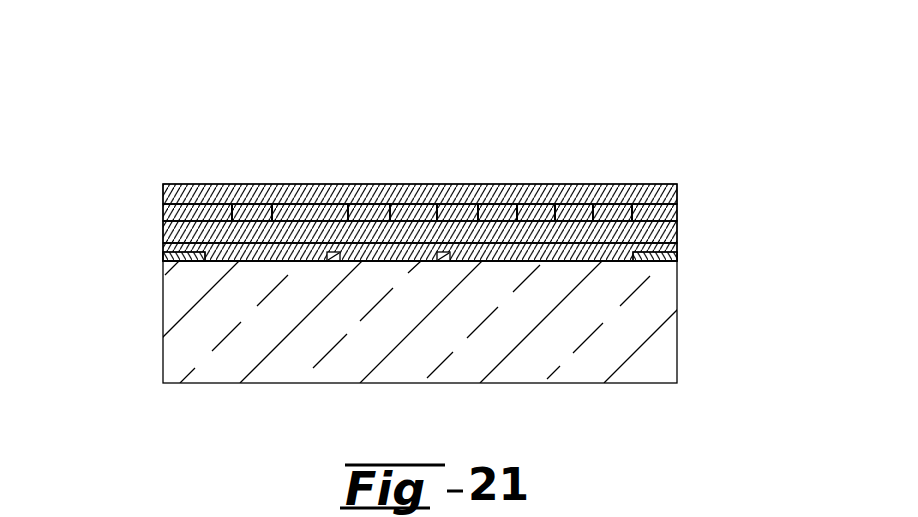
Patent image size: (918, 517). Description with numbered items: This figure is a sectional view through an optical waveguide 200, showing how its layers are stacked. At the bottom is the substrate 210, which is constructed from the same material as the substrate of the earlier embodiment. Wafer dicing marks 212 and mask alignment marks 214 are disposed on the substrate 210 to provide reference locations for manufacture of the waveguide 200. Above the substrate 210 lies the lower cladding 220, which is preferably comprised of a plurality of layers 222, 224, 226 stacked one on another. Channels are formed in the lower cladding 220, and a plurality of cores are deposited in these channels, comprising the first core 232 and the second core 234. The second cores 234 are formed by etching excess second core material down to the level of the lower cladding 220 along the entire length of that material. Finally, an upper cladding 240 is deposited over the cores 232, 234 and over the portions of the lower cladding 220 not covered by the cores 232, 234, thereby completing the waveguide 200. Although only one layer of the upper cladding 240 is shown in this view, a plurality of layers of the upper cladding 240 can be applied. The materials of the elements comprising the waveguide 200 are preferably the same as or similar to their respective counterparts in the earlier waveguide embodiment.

The waveguide 200 is at (382, 83).
The substrate 210 is at (677, 352).
The wafer dicing marks 212 is at (173, 264).
The mask alignment marks 214 is at (440, 262).
The lower cladding 220 is at (150, 207).
The layer of lower cladding 222 is at (677, 247).
The layer of lower cladding 224 is at (677, 230).
The layer of lower cladding 226 is at (677, 213).
The first core 232 is at (462, 203).
The second core 234 is at (258, 203).
The upper cladding 240 is at (162, 196).